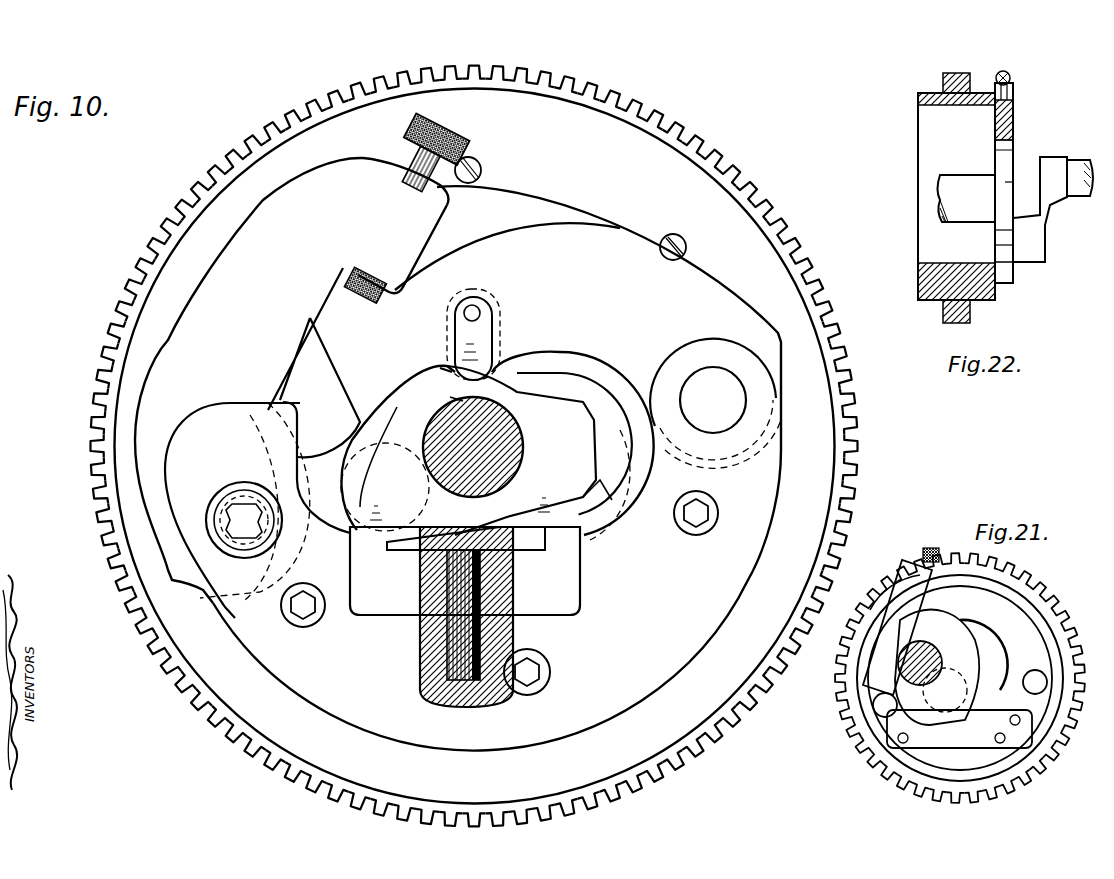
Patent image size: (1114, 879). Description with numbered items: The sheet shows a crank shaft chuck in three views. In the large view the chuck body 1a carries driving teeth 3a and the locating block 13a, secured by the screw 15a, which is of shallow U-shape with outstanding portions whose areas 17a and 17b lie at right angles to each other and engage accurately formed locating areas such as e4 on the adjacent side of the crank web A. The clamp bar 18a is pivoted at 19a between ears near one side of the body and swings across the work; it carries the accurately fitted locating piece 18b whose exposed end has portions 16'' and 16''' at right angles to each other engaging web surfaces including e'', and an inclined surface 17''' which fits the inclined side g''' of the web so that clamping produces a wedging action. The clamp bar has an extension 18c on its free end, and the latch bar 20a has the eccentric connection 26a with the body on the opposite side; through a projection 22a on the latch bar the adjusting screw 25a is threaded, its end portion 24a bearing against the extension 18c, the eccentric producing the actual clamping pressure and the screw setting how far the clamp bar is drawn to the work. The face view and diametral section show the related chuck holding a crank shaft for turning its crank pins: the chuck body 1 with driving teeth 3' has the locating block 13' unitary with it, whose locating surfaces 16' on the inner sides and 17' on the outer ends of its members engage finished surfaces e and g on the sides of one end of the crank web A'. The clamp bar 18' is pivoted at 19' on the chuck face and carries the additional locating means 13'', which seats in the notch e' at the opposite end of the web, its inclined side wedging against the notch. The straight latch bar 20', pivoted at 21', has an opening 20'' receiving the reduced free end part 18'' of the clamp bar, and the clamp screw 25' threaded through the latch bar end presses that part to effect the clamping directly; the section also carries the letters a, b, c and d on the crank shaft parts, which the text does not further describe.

In FIG. 10, the chuck body 1a is at (772, 265).
In FIG. 10, the driving teeth 3a is at (738, 176).
In FIG. 10, the locating block 13a is at (578, 598).
In FIG. 10, the screw 15a is at (420, 650).
In FIG. 10, the locating portion 16'' is at (427, 358).
In FIG. 21, the locating portion 16'' is at (912, 628).
In FIG. 10, the locating portion 16''' is at (429, 410).
In FIG. 21, the locating portion 16''' is at (984, 655).
In FIG. 10, the locating area 17a is at (466, 534).
In FIG. 10, the locating area 17b is at (347, 527).
In FIG. 10, the inclined surface 17''' is at (503, 346).
In FIG. 10, the clamp bar 18a is at (608, 250).
In FIG. 10, the locating piece 18b is at (483, 334).
In FIG. 10, the extension 18c is at (333, 306).
In FIG. 10, the pivot 19a is at (704, 378).
In FIG. 10, the latch bar 20a is at (228, 272).
In FIG. 10, the projection 22a is at (446, 214).
In FIG. 10, the end portion 24a is at (366, 304).
In FIG. 10, the adjusting screw 25a is at (462, 137).
In FIG. 10, the eccentric connection 26a is at (250, 502).
In FIG. 10, the crank web A is at (490, 461).
In FIG. 10, the web surface e'' is at (487, 390).
In FIG. 10, the inclined side g''' is at (530, 392).
In FIG. 21, the inclined side g''' is at (994, 612).
In FIG. 10, the locating area e4 is at (546, 540).
In FIG. 22, the chuck body 1 is at (918, 280).
In FIG. 22, the driving teeth 3' is at (952, 185).
In FIG. 21, the driving teeth 3' is at (958, 679).
In FIG. 22, the locating block 13' is at (1017, 289).
In FIG. 21, the locating block 13' is at (971, 758).
In FIG. 22, the clamp bar 18' is at (1025, 183).
In FIG. 21, the clamp bar 18' is at (976, 675).
In FIG. 22, the latch bar 20' is at (1025, 88).
In FIG. 21, the latch bar 20' is at (841, 696).
In FIG. 22, the clamp screw 25' is at (1023, 70).
In FIG. 21, the clamp screw 25' is at (932, 533).
In FIG. 22, the crank web A' is at (1022, 137).
In FIG. 21, the crank web A' is at (952, 667).
In FIG. 22, the shaft a is at (962, 178).
In FIG. 22, the shaft end b is at (1010, 183).
In FIG. 22, the lever arm c is at (1050, 230).
In FIG. 22, the knob d is at (1076, 165).
In FIG. 22, the finished surface e is at (986, 234).
In FIG. 21, the finished surface e is at (949, 725).
In FIG. 22, the finished surface g is at (1012, 203).
In FIG. 21, the finished surface g is at (969, 652).
In FIG. 21, the additional locating means 13'' is at (974, 604).
In FIG. 21, the locating surface 16' is at (965, 735).
In FIG. 21, the locating surface 17' is at (948, 696).
In FIG. 21, the reduced free end part 18'' is at (881, 591).
In FIG. 21, the pivot 19' is at (1064, 657).
In FIG. 21, the opening 20'' is at (897, 614).
In FIG. 21, the pivot 21' is at (860, 730).
In FIG. 21, the notch e' is at (974, 637).